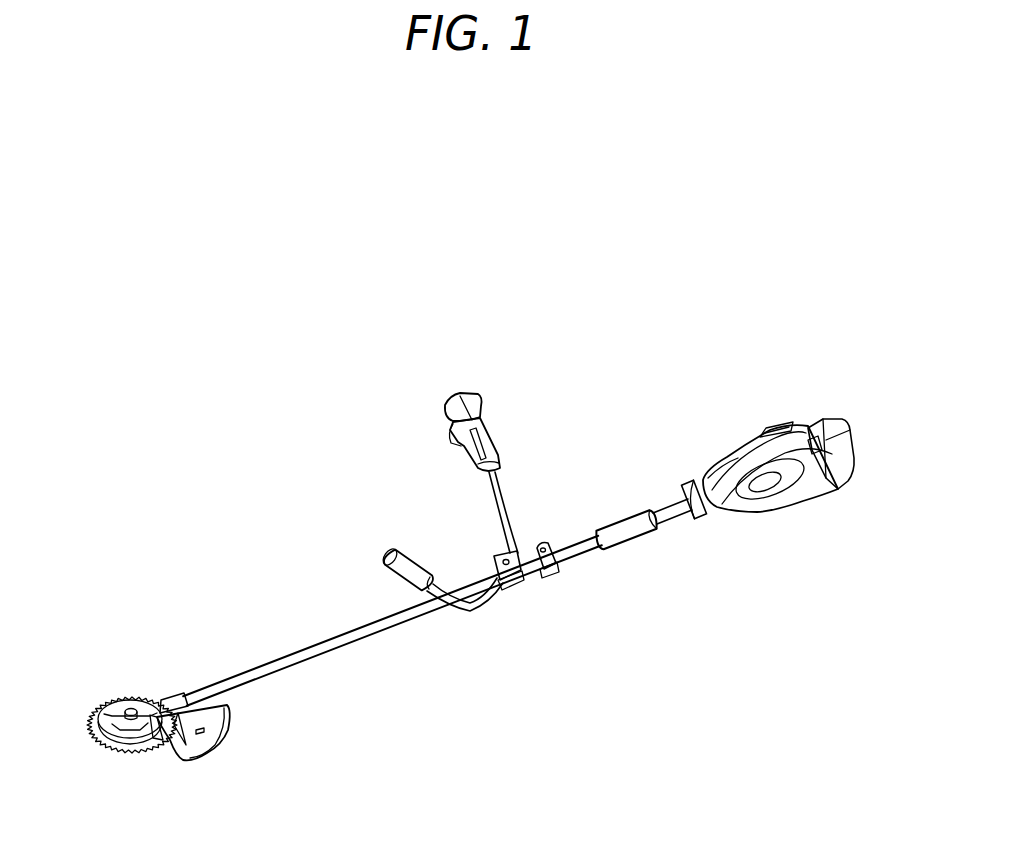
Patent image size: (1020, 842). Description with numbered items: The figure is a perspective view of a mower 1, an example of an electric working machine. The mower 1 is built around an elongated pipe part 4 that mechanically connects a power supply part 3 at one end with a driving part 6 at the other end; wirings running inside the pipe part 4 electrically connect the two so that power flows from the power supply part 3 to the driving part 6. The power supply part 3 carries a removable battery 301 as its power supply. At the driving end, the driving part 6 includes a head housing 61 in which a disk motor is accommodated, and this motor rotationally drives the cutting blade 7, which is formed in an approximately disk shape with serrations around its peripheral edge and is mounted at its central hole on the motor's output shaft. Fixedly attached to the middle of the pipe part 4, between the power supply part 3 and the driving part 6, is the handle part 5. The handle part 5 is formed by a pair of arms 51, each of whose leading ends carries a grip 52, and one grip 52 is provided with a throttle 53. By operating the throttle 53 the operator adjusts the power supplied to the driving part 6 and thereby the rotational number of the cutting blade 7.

The mower 1 is at (482, 768).
The power supply part 3 is at (722, 447).
The removable battery 301 is at (843, 440).
The pipe part 4 is at (343, 650).
The handle part 5 is at (474, 615).
The arms 51 is at (493, 585).
The grip 52 is at (398, 580).
The throttle 53 is at (444, 404).
The driving part 6 is at (128, 737).
The head housing 61 is at (126, 706).
The cutting blade 7 is at (106, 712).